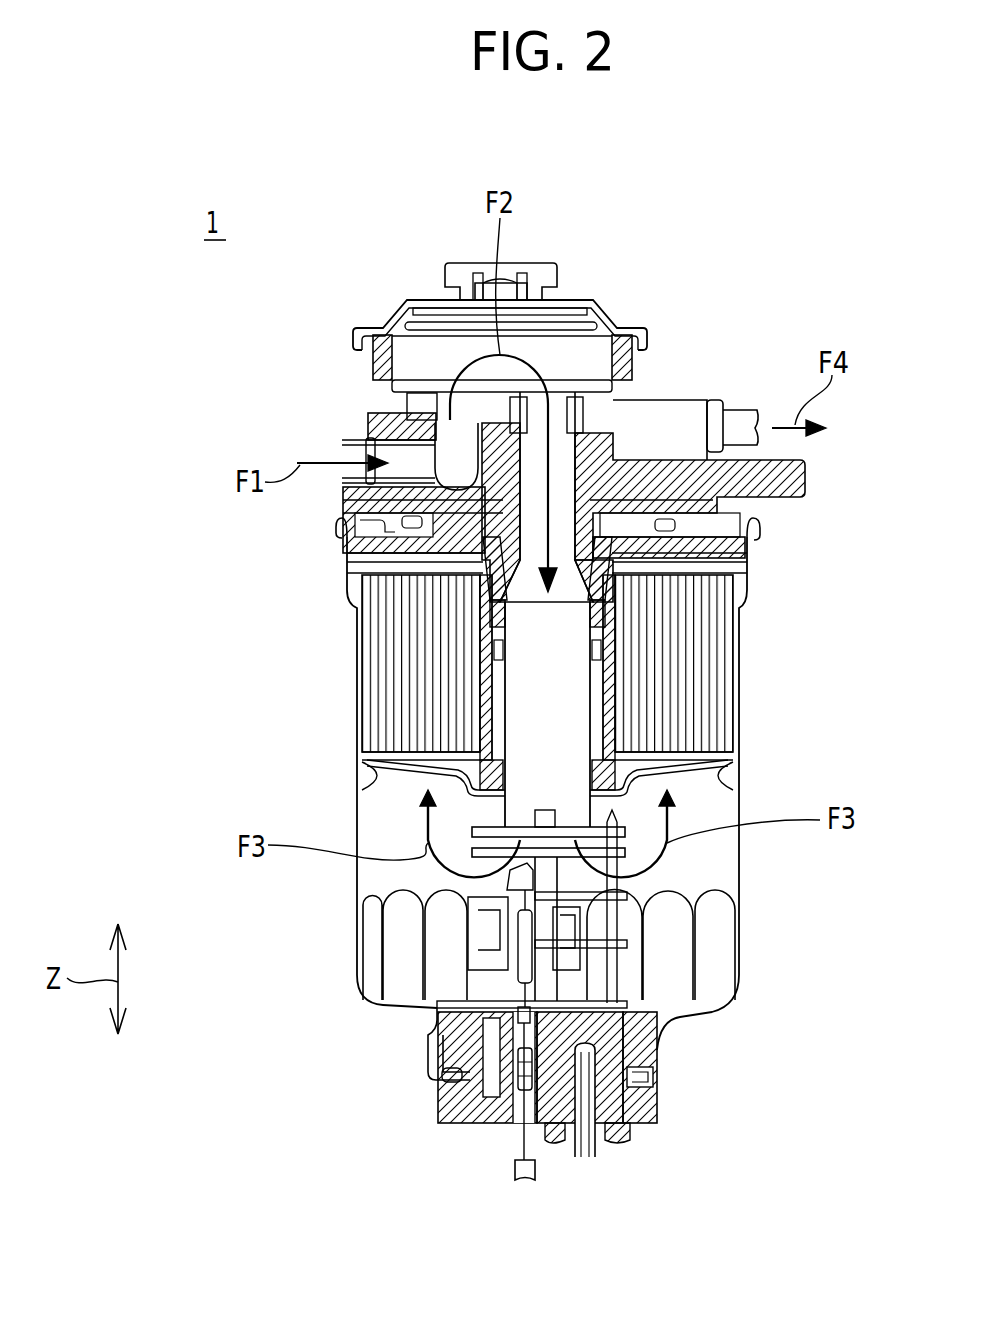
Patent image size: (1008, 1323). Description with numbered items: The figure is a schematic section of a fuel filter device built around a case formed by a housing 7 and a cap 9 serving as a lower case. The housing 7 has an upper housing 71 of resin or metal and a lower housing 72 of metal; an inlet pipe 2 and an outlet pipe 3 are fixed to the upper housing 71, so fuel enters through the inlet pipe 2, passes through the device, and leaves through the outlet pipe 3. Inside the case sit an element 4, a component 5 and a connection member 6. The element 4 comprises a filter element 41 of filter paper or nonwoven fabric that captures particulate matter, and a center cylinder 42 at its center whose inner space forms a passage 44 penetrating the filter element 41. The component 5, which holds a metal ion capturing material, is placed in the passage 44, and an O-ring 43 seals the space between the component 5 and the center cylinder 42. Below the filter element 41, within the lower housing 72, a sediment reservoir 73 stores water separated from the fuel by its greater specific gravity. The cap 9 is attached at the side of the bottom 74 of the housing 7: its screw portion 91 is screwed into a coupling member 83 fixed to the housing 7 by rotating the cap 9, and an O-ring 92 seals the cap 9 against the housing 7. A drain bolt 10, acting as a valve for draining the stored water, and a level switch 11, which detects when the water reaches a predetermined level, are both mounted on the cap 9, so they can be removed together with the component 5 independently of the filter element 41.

The inlet pipe 2 is at (455, 437).
The outlet pipe 3 is at (733, 410).
The element 4 is at (863, 633).
The filter element 41 is at (697, 688).
The center cylinder 42 is at (615, 640).
The O-ring 43 is at (508, 608).
The passage 44 is at (518, 690).
The component 5 is at (555, 708).
The connection member 6 is at (605, 886).
The housing 7 is at (865, 513).
The upper housing 71 is at (747, 478).
The lower housing 72 is at (752, 573).
The sediment reservoir 73 is at (378, 820).
The bottom 74 is at (663, 1080).
The coupling member 83 is at (663, 1045).
The cap 9 is at (445, 1107).
The screw portion 91 is at (432, 1020).
The O-ring 92 is at (445, 1073).
The drain bolt 10 is at (625, 1140).
The level switch 11 is at (575, 927).